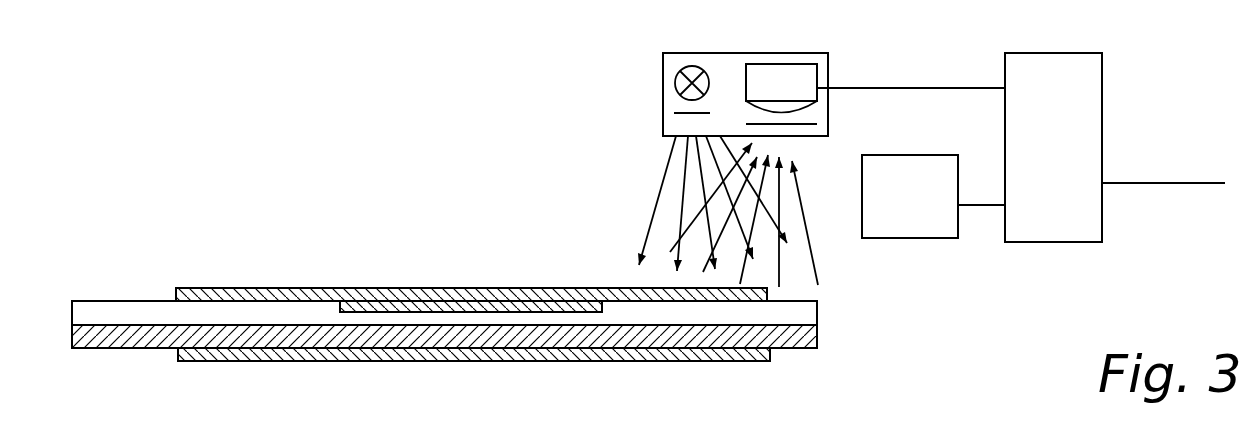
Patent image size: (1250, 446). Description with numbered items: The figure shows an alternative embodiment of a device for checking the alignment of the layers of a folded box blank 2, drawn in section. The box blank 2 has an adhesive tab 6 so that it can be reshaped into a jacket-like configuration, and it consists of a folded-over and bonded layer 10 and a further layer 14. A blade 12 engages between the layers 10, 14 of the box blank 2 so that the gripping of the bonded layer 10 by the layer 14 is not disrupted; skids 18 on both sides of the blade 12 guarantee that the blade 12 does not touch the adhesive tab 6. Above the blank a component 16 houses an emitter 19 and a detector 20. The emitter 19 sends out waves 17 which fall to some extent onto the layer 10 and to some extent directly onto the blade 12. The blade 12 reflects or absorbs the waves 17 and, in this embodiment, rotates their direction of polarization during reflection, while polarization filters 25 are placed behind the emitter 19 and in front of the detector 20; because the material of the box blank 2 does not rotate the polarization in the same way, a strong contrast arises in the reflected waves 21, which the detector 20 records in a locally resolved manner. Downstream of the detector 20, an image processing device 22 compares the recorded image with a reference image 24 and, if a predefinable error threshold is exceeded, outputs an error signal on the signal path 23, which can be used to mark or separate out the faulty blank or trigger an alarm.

The box blank 2 is at (432, 288).
The adhesive tab 6 is at (358, 308).
The layer 10 is at (497, 295).
The blade 12 is at (398, 337).
The layer 14 is at (538, 352).
The component 16 is at (673, 107).
The waves 17 is at (655, 207).
The skids 18 is at (320, 313).
The emitter 19 is at (676, 80).
The detector 20 is at (778, 88).
The reflected waves 21 is at (805, 225).
The image processing device 22 is at (1066, 167).
The signal path 23 is at (1162, 182).
The reference image 24 is at (926, 213).
The polarization filters 25 is at (768, 123).